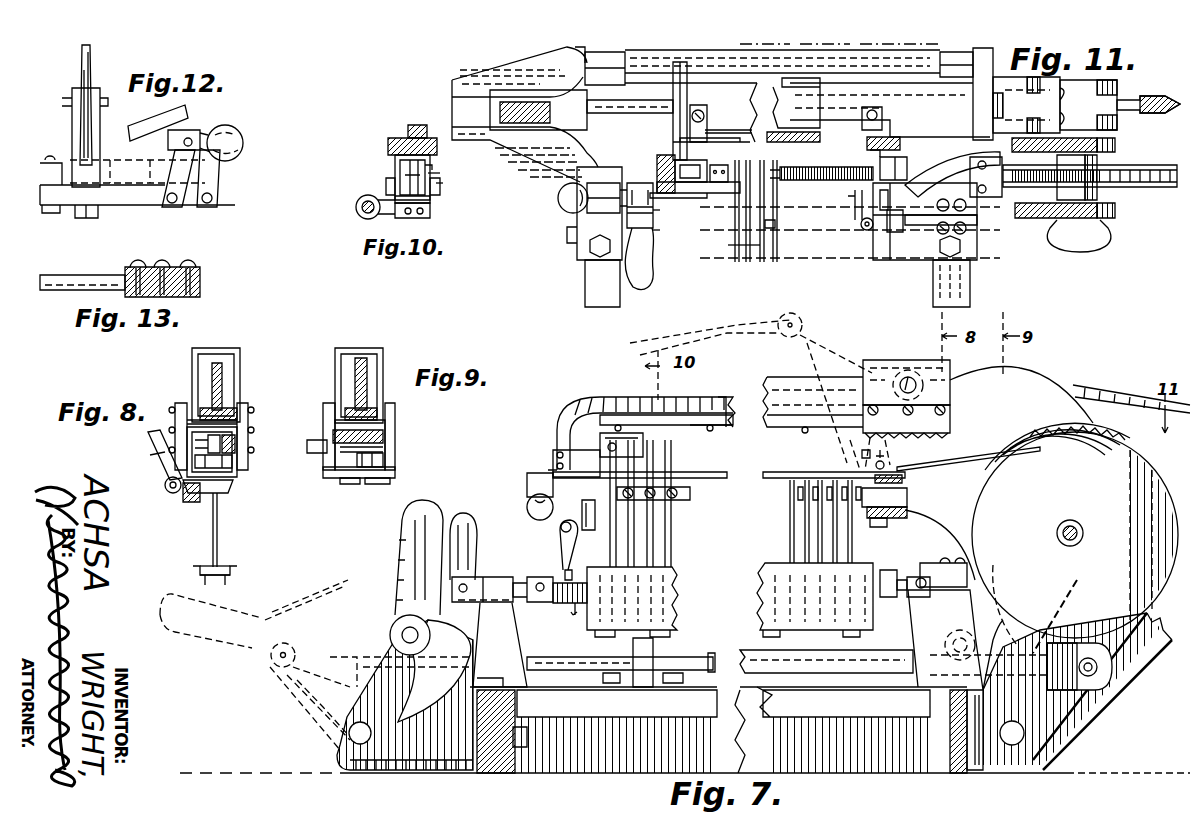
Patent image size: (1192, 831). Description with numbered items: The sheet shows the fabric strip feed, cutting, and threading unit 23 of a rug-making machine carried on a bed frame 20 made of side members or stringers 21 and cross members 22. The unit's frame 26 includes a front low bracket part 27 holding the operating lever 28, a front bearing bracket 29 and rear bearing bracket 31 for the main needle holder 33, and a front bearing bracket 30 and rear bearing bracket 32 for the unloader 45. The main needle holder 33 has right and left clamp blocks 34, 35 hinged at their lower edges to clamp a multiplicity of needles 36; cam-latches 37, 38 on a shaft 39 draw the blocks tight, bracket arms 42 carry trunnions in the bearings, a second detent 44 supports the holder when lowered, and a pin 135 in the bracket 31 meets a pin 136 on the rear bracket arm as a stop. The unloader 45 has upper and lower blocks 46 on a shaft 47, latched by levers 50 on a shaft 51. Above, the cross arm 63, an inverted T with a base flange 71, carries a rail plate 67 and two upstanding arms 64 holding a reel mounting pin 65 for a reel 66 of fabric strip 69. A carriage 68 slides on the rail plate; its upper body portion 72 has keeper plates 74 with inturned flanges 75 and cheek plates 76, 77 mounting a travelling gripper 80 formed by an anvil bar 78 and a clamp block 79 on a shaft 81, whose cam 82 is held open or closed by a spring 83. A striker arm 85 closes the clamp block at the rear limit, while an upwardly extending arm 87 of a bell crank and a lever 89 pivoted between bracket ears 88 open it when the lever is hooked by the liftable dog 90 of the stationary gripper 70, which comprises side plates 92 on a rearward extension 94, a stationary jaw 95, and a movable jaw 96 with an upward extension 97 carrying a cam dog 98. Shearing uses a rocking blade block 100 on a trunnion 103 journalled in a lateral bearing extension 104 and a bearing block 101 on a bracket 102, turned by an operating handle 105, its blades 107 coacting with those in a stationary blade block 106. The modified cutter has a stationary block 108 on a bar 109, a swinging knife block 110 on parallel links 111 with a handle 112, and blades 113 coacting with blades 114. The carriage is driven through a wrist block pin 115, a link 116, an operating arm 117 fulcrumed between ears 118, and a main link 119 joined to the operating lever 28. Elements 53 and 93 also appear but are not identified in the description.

In FIG. 11, the bed frame 20 is at (577, 262).
In FIG. 7, the bed frame 20 is at (703, 767).
In FIG. 11, the side members or stringers 21 is at (972, 285).
In FIG. 7, the side members or stringers 21 is at (490, 757).
In FIG. 7, the cross members 22 is at (650, 760).
In FIG. 11, the fabric strip feed, cutting, and threading unit 23 is at (550, 158).
In FIG. 7, the fabric strip feed, cutting, and threading unit 23 is at (568, 380).
In FIG. 11, the frame 26 is at (893, 258).
In FIG. 7, the frame 26 is at (667, 707).
In FIG. 11, the front low bracket part 27 is at (487, 72).
In FIG. 7, the front low bracket part 27 is at (405, 707).
In FIG. 11, the operating lever 28 is at (522, 110).
In FIG. 7, the operating lever 28 is at (408, 568).
In FIG. 11, the front bearing bracket 29 is at (598, 215).
In FIG. 7, the front bearing bracket 29 is at (500, 583).
In FIG. 11, the front bearing bracket 30 is at (600, 63).
In FIG. 11, the bearing bracket 31 is at (923, 238).
In FIG. 7, the bearing bracket 31 is at (935, 632).
In FIG. 11, the bearing bracket 32 is at (947, 67).
In FIG. 8, the main needle holder 33 is at (227, 565).
In FIG. 7, the main needle holder 33 is at (684, 578).
In FIG. 8, the right clamp block 34 is at (197, 570).
In FIG. 7, the right clamp block 34 is at (678, 613).
In FIG. 8, the left clamp block 35 is at (237, 576).
In FIG. 8, the needles 36 is at (218, 532).
In FIG. 7, the needles 36 is at (668, 528).
In FIG. 7, the cam-latch 37 is at (573, 577).
In FIG. 7, the cam-latch 38 is at (887, 572).
In FIG. 7, the shaft 39 is at (900, 573).
In FIG. 11, the bracket arms 42 is at (630, 205).
In FIG. 7, the bracket arms 42 is at (563, 603).
In FIG. 7, the second detent 44 is at (607, 662).
In FIG. 11, the unloader 45 is at (778, 43).
In FIG. 11, the upper and lower blocks 46 is at (727, 90).
In FIG. 11, the shaft 47 is at (662, 70).
In FIG. 11, the lever of the second order 50 is at (686, 72).
In FIG. 7, the lever of the second order 50 is at (560, 537).
In FIG. 11, the shaft 51 is at (797, 133).
In FIG. 11, the knob 53 is at (560, 198).
In FIG. 7, the knob 53 is at (467, 517).
In FIG. 12, the cross arm 63 is at (90, 73).
In FIG. 10, the cross arm 63 is at (405, 130).
In FIG. 11, the cross arm 63 is at (657, 163).
In FIG. 8, the cross arm 63 is at (222, 382).
In FIG. 9, the cross arm 63 is at (369, 375).
In FIG. 7, the cross arm 63 is at (718, 398).
In FIG. 11, the upstanding arms 64 is at (1105, 145).
In FIG. 7, the upstanding arms 64 is at (1003, 635).
In FIG. 11, the reel mounting pin 65 is at (1104, 244).
In FIG. 11, the reel 66 is at (1142, 188).
In FIG. 7, the reel 66 is at (1130, 590).
In FIG. 12, the rail plate 67 is at (62, 100).
In FIG. 10, the rail plate 67 is at (388, 147).
In FIG. 7, the rail plate 67 is at (730, 425).
In FIG. 11, the carriage 68 is at (870, 150).
In FIG. 8, the carriage 68 is at (192, 352).
In FIG. 9, the carriage 68 is at (338, 352).
In FIG. 7, the carriage 68 is at (873, 373).
In FIG. 11, the fabric strip 69 is at (788, 180).
In FIG. 8, the fabric strip 69 is at (231, 494).
In FIG. 7, the fabric strip 69 is at (752, 476).
In FIG. 10, the gripper 70 is at (440, 176).
In FIG. 11, the gripper 70 is at (690, 198).
In FIG. 7, the gripper 70 is at (597, 443).
In FIG. 7, the base flange 71 is at (700, 415).
In FIG. 8, the upper body portion 72 is at (240, 363).
In FIG. 9, the upper body portion 72 is at (384, 352).
In FIG. 7, the upper body portion 72 is at (897, 365).
In FIG. 8, the keeper plates 74 is at (241, 403).
In FIG. 8, the inturned flanges 75 is at (241, 422).
In FIG. 9, the cheek plate 76 is at (395, 412).
In FIG. 9, the cheek plate 77 is at (328, 403).
In FIG. 7, the cheek plate 77 is at (865, 410).
In FIG. 11, the anvil bar 78 is at (890, 157).
In FIG. 9, the anvil bar 78 is at (342, 478).
In FIG. 7, the anvil bar 78 is at (903, 483).
In FIG. 11, the clamp block 79 is at (905, 167).
In FIG. 8, the clamp block 79 is at (244, 466).
In FIG. 9, the clamp block 79 is at (376, 480).
In FIG. 7, the clamp block 79 is at (920, 473).
In FIG. 7, the travelling gripper 80 is at (845, 447).
In FIG. 9, the shaft 81 is at (384, 461).
In FIG. 8, the cam 82 is at (241, 453).
In FIG. 8, the spring 83 is at (241, 445).
In FIG. 9, the spring 83 is at (384, 440).
In FIG. 11, the striker arm 85 is at (917, 190).
In FIG. 9, the striker arm 85 is at (385, 452).
In FIG. 7, the striker arm 85 is at (958, 448).
In FIG. 11, the upwardly extending arm 87 is at (853, 199).
In FIG. 8, the upwardly extending arm 87 is at (172, 438).
In FIG. 9, the bracket ears 88 is at (327, 470).
In FIG. 11, the lever 89 is at (862, 214).
In FIG. 8, the lever 89 is at (150, 448).
In FIG. 9, the lever 89 is at (310, 447).
In FIG. 10, the liftable dog 90 is at (443, 184).
In FIG. 11, the liftable dog 90 is at (708, 167).
In FIG. 10, the side plates 92 is at (386, 187).
In FIG. 11, the side plates 92 is at (700, 183).
In FIG. 7, the side plates 92 is at (553, 461).
In FIG. 11, the bar 93 is at (775, 168).
In FIG. 10, the rearward extension 94 is at (432, 213).
In FIG. 10, the stationary jaw 95 is at (432, 199).
In FIG. 7, the stationary jaw 95 is at (600, 500).
In FIG. 10, the movable jaw 96 is at (440, 186).
In FIG. 10, the upward extension 97 is at (432, 171).
In FIG. 10, the cam dog 98 is at (400, 170).
In FIG. 11, the cam dog 98 is at (716, 200).
In FIG. 13, the rocking blade block 100 is at (200, 290).
In FIG. 11, the rocking blade block 100 is at (770, 225).
In FIG. 11, the bearing block 101 is at (888, 233).
In FIG. 11, the bracket 102 is at (957, 231).
In FIG. 7, the bracket 102 is at (940, 527).
In FIG. 13, the trunnion 103 is at (103, 280).
In FIG. 10, the trunnion 103 is at (356, 207).
In FIG. 11, the trunnion 103 is at (665, 239).
In FIG. 10, the lateral bearing extension 104 is at (392, 212).
In FIG. 11, the lateral bearing extension 104 is at (653, 212).
In FIG. 7, the lateral bearing extension 104 is at (530, 474).
In FIG. 11, the operating handle 105 is at (647, 286).
In FIG. 7, the operating handle 105 is at (530, 510).
In FIG. 8, the stationary blade block 106 is at (188, 507).
In FIG. 7, the stationary blade block 106 is at (907, 502).
In FIG. 13, the blades 107 is at (186, 262).
In FIG. 11, the blades 107 is at (735, 258).
In FIG. 8, the blades 107 is at (152, 457).
In FIG. 7, the blades 107 is at (685, 455).
In FIG. 12, the stationary block 108 is at (40, 178).
In FIG. 12, the bar 109 is at (48, 196).
In FIG. 12, the swinging knife block 110 is at (203, 130).
In FIG. 12, the parallel links 111 is at (215, 172).
In FIG. 12, the handle 112 is at (242, 143).
In FIG. 12, the blades 113 is at (155, 128).
In FIG. 12, the blades 114 is at (68, 172).
In FIG. 7, the wrist block pin 115 is at (913, 378).
In FIG. 7, the link 116 is at (1117, 392).
In FIG. 11, the operating arm 117 is at (1130, 106).
In FIG. 7, the operating arm 117 is at (1130, 740).
In FIG. 11, the ears 118 is at (1000, 82).
In FIG. 7, the ears 118 is at (1043, 767).
In FIG. 11, the main link 119 is at (645, 107).
In FIG. 7, the main link 119 is at (775, 662).
In FIG. 7, the pin 135 is at (932, 587).
In FIG. 7, the pin 136 is at (945, 567).